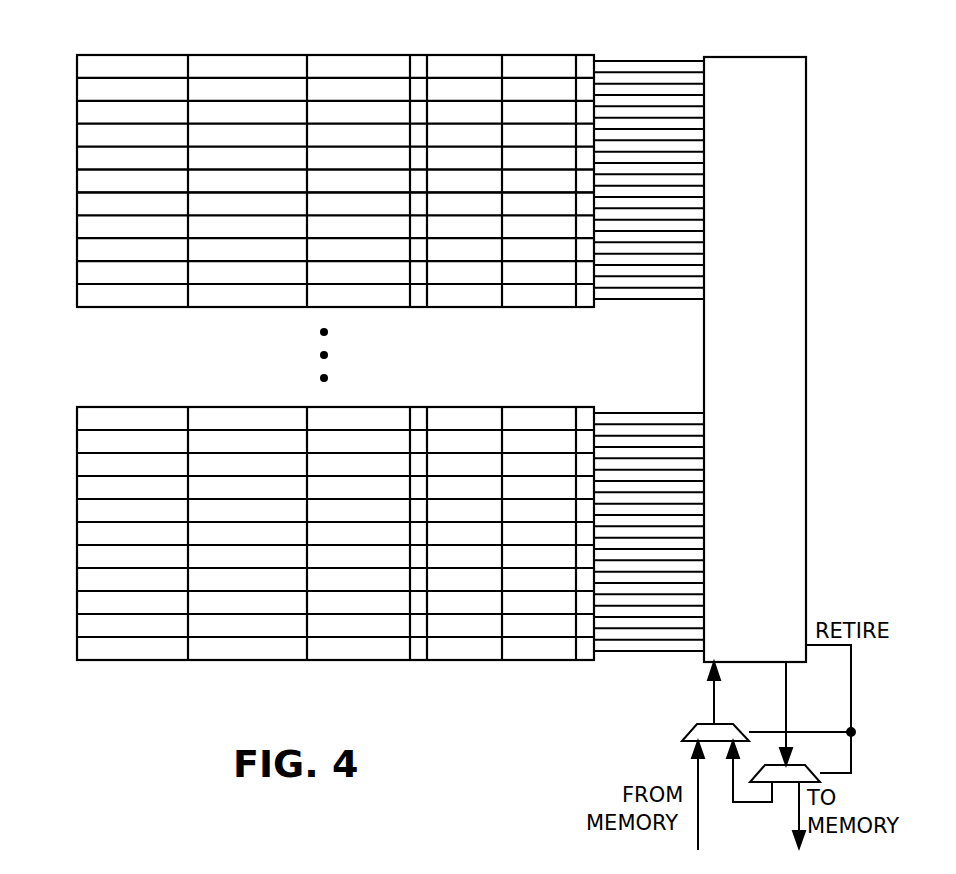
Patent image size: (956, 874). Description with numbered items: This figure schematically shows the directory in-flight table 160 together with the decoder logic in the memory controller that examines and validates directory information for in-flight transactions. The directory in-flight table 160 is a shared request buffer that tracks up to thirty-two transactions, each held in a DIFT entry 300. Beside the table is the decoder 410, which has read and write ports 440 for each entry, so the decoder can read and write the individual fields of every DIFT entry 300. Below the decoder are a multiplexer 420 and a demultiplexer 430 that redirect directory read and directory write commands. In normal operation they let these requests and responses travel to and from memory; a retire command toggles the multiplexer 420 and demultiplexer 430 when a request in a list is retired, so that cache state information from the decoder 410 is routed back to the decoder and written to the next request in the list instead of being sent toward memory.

The directory in-flight table 160 is at (92, 55).
The DIFT entry 300 is at (64, 179).
The decoder 410 is at (784, 57).
The multiplexer 420 is at (695, 727).
The demultiplexer 430 is at (798, 764).
The read and write ports 440 is at (612, 58).